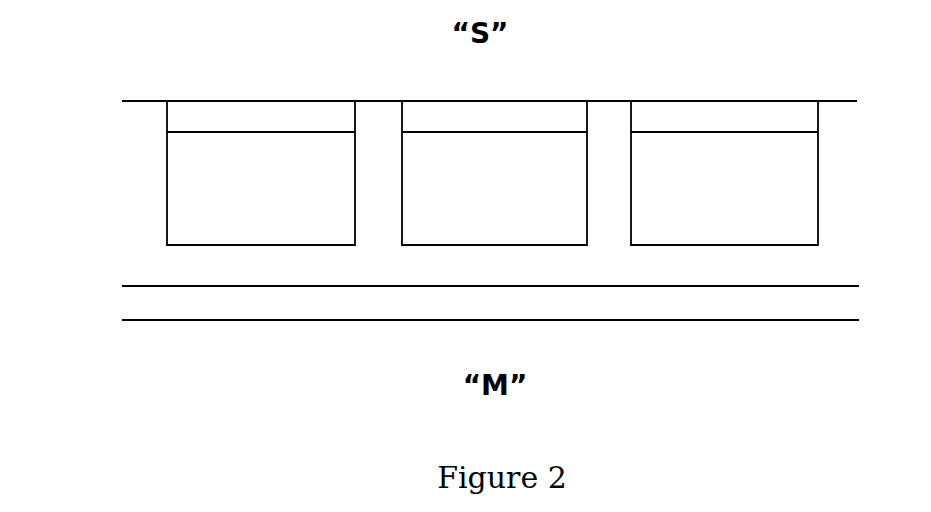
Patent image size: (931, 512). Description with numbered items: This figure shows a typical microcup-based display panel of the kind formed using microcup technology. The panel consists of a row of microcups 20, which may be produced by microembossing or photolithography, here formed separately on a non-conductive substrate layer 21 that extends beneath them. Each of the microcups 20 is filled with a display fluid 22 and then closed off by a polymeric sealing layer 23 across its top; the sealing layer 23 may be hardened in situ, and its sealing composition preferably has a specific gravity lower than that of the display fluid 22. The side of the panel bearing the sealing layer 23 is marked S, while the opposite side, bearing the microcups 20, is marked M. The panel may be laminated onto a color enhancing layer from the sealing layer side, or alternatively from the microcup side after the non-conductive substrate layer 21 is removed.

The microcups 20 is at (150, 180).
The non-conductive substrate layer 21 is at (264, 301).
The display fluid 22 is at (773, 182).
The polymeric sealing layer 23 is at (724, 116).